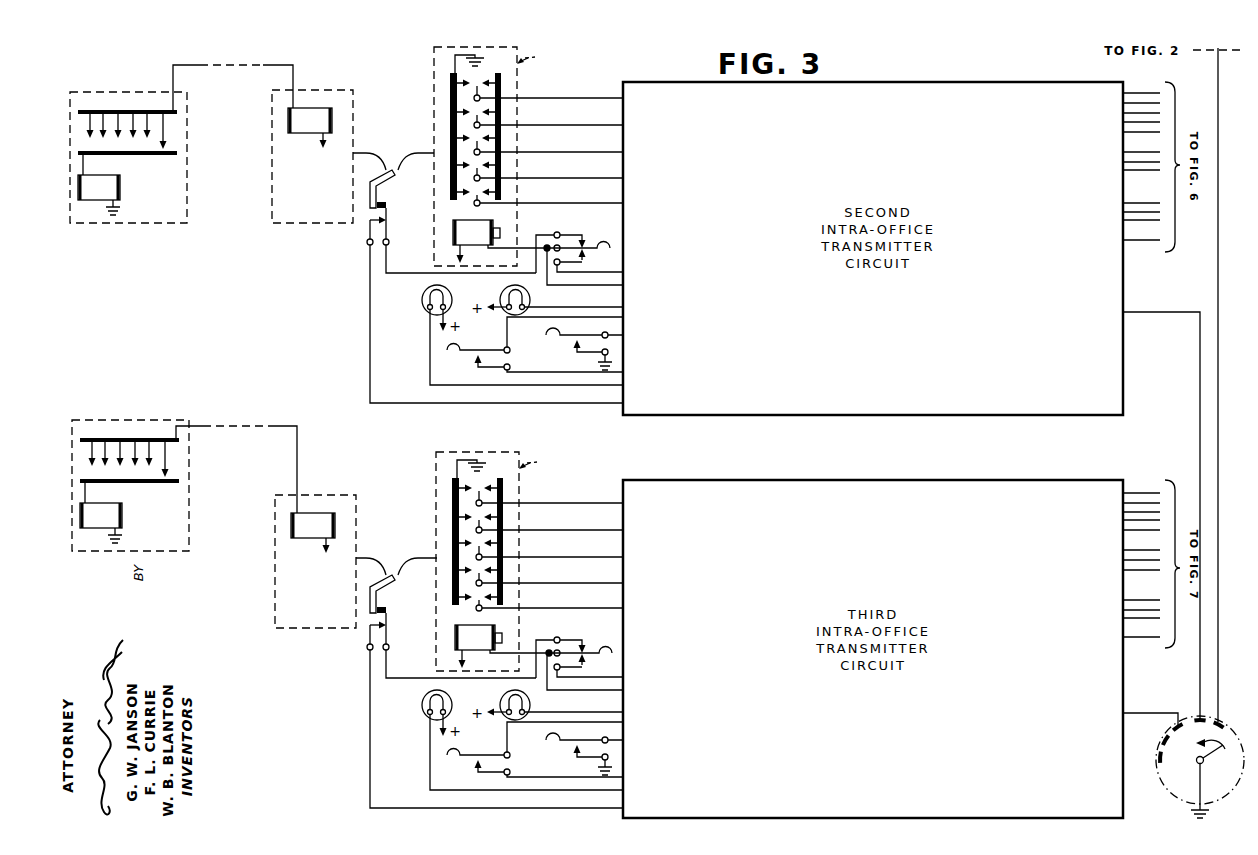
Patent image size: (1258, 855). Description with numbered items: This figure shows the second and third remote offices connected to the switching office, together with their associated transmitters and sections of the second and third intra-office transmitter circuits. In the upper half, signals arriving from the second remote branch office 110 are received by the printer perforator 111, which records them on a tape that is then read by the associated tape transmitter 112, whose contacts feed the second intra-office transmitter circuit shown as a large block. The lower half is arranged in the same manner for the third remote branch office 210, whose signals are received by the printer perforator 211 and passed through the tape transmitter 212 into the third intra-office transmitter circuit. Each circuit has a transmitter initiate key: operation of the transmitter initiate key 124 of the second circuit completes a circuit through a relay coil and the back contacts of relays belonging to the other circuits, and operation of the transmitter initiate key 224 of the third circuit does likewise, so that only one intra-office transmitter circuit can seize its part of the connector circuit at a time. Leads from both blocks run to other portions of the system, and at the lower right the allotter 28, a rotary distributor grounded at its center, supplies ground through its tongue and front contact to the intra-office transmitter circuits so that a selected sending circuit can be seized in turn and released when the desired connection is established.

The allotter 28 is at (1163, 741).
The remote branch office 110 is at (147, 230).
The printer perforator 111 is at (303, 229).
The tape transmitter 112 is at (428, 76).
The transmitter initiate key 124 is at (470, 354).
The remote branch office 210 is at (174, 556).
The printer perforator 211 is at (311, 633).
The tape transmitter 212 is at (430, 480).
The transmitter initiate key 224 is at (474, 760).